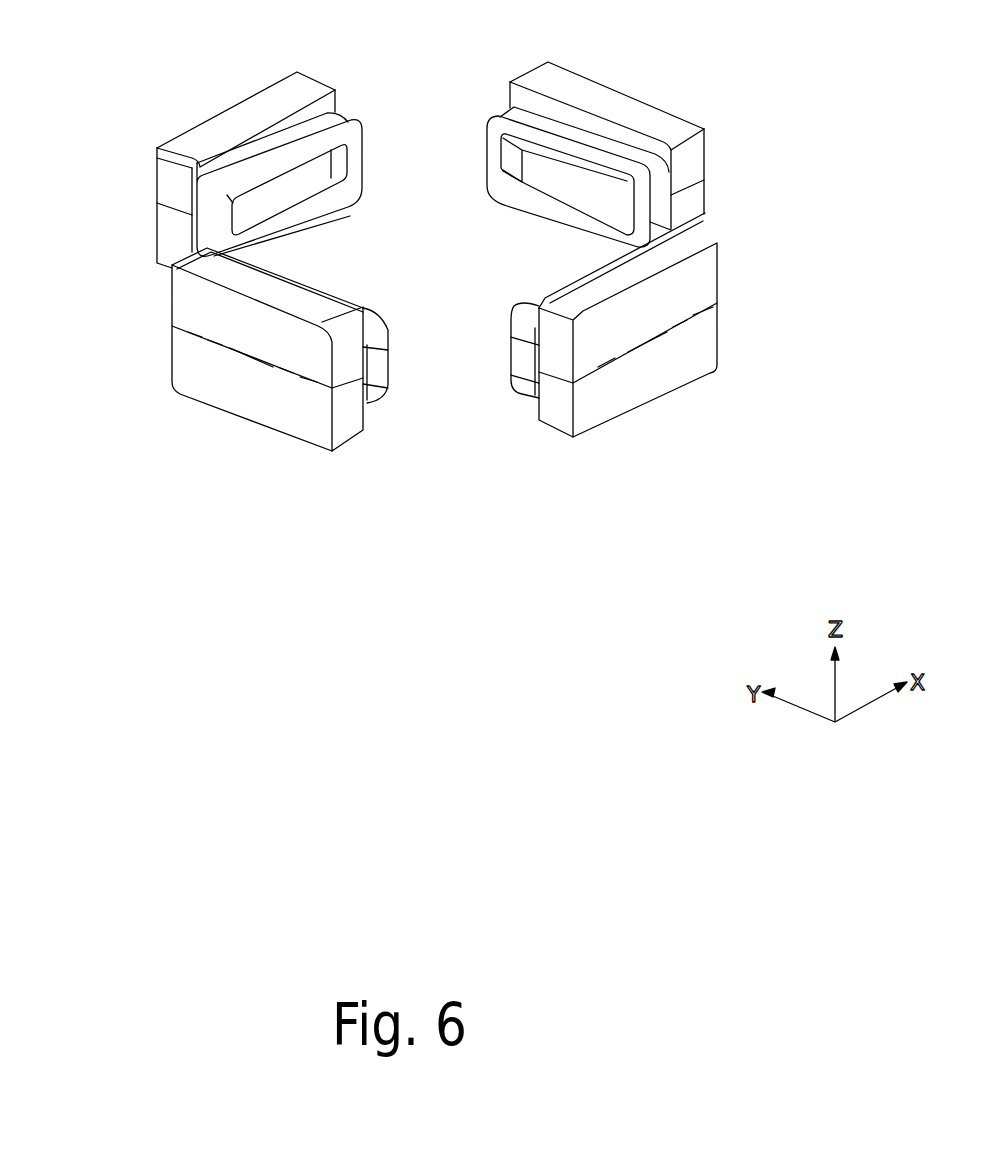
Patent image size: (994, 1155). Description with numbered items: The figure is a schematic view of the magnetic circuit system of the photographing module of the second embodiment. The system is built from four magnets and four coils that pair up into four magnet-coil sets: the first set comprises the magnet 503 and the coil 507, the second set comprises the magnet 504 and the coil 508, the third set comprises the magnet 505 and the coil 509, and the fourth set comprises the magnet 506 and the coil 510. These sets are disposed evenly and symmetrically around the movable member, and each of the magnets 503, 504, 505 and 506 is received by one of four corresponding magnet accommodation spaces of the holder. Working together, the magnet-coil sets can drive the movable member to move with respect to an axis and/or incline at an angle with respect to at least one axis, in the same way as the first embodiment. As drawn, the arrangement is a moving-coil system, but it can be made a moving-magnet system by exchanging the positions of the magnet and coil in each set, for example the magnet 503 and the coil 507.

The magnet 503 is at (180, 175).
The magnet 504 is at (650, 117).
The magnet 505 is at (655, 262).
The magnet 506 is at (358, 400).
The coil 507 is at (290, 143).
The coil 508 is at (530, 118).
The coil 509 is at (527, 360).
The coil 510 is at (380, 370).